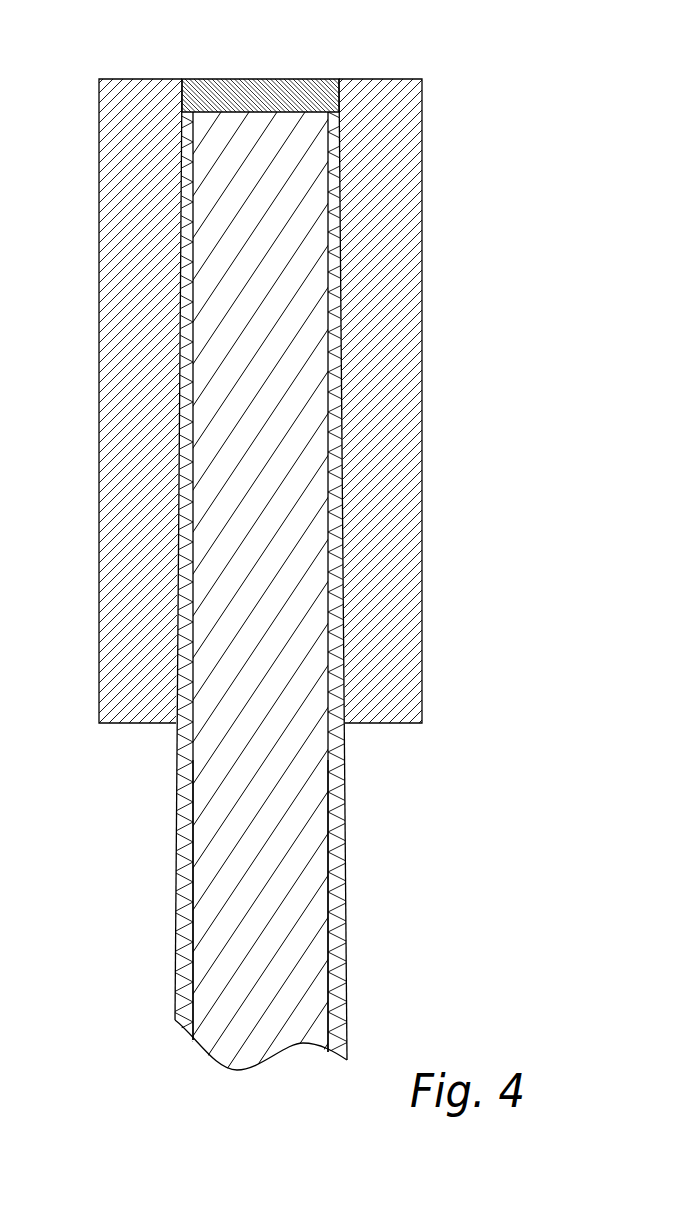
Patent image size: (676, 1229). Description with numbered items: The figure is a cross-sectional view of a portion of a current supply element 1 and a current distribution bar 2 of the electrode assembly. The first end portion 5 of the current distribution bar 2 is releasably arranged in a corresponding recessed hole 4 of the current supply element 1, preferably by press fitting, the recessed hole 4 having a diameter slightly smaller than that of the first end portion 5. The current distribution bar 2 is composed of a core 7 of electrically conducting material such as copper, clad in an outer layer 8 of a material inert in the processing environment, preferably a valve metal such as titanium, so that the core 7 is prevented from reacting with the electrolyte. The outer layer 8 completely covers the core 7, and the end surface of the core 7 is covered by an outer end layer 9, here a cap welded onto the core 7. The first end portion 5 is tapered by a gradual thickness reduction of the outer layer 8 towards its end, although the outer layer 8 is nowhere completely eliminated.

The current supply element 1 is at (390, 92).
The current distribution bar 2 is at (165, 984).
The recessed hole 4 is at (178, 487).
The first end portion 5 is at (267, 280).
The core 7 is at (253, 833).
The outer layer 8 is at (345, 853).
The outer end layer 9 is at (255, 95).